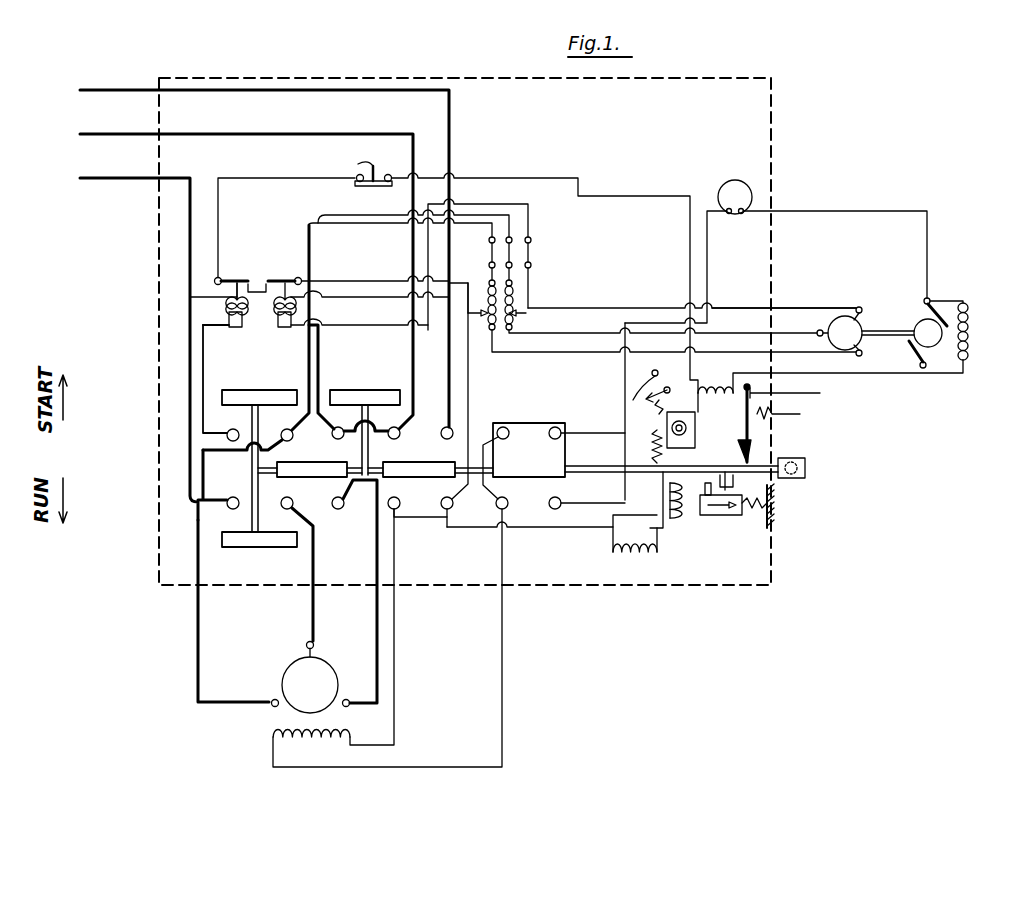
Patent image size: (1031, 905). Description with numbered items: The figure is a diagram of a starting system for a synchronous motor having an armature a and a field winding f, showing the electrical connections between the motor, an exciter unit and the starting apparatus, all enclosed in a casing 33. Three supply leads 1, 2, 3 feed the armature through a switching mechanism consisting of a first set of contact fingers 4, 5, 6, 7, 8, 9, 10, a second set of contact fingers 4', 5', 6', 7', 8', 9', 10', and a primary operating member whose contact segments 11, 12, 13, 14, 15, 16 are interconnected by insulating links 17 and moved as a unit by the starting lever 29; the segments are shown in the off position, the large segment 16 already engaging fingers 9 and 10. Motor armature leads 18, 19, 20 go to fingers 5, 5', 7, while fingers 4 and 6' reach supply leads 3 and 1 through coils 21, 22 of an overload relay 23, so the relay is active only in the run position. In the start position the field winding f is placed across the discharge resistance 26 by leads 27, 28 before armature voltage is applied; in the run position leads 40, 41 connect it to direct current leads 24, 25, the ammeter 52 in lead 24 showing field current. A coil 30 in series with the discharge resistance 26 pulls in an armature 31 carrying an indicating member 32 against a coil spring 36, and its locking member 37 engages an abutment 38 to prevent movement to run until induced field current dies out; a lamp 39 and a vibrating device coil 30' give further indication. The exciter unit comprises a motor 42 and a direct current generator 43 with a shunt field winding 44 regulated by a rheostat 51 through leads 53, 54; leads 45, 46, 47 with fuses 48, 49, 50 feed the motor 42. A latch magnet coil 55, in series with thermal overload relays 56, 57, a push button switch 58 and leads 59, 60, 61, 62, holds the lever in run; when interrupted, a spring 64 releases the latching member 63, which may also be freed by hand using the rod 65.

The supply lead 1 is at (108, 89).
The supply lead 2 is at (105, 133).
The supply lead 3 is at (105, 177).
The contact finger 4 is at (200, 387).
The contact finger 4' is at (204, 490).
The contact finger 5 is at (256, 337).
The contact finger 5' is at (298, 493).
The contact finger 6 is at (348, 382).
The contact finger 6' is at (347, 511).
The contact finger 7 is at (407, 427).
The contact finger 7' is at (405, 494).
The contact finger 8 is at (467, 417).
The contact finger 8' is at (460, 510).
The contact finger 9 is at (502, 447).
The contact finger 9' is at (518, 495).
The contact finger 10 is at (572, 416).
The contact finger 10' is at (587, 494).
The contact segment 11 is at (230, 547).
The contact segment 12 is at (245, 391).
The contact segment 13 is at (313, 464).
The contact segment 14 is at (356, 391).
The contact segment 15 is at (406, 464).
The contact segment 16 is at (536, 425).
The insulating links 17 is at (250, 478).
The motor armature lead 18 is at (199, 597).
The motor armature lead 19 is at (314, 615).
The motor armature lead 20 is at (376, 641).
The overload relay coil 21 is at (225, 320).
The overload relay coil 22 is at (351, 320).
The overload relay 23 is at (265, 279).
The direct current lead 24 is at (624, 394).
The direct current lead 25 is at (529, 372).
The discharge resistance 26 is at (650, 448).
The lead 27 is at (408, 519).
The lead 28 is at (588, 434).
The starting lever 29 is at (806, 460).
The coil 30 is at (660, 500).
The vibrating device coil 30' is at (639, 568).
The armature 31 is at (714, 507).
The indicating member 32 is at (770, 504).
The casing 33 is at (157, 311).
The coil spring 36 is at (753, 518).
The locking member 37 is at (700, 483).
The abutment 38 is at (734, 487).
The incandescent lamp 39 is at (688, 428).
The lead 40 is at (396, 631).
The lead 41 is at (504, 613).
The exciter motor 42 is at (852, 327).
The direct current generator 43 is at (928, 298).
The shunt field winding 44 is at (969, 331).
The lead 45 is at (731, 307).
The lead 46 is at (327, 216).
The lead 47 is at (384, 225).
The fuse 48 is at (490, 262).
The fuse 49 is at (507, 237).
The fuse 50 is at (530, 252).
The rheostat 51 is at (647, 398).
The ammeter 52 is at (752, 197).
The lead 53 is at (886, 373).
The lead 54 is at (546, 530).
The latch magnet coil 55 is at (704, 399).
The thermal overload relay 56 is at (482, 314).
The thermal overload relay 57 is at (520, 318).
The push button switch 58 is at (360, 172).
The lead 59 is at (506, 178).
The lead 60 is at (240, 178).
The lead 61 is at (356, 282).
The lead 62 is at (604, 307).
The latching member 63 is at (758, 452).
The spring 64 is at (779, 414).
The rod 65 is at (789, 395).
The armature a is at (284, 672).
The field winding f is at (311, 743).